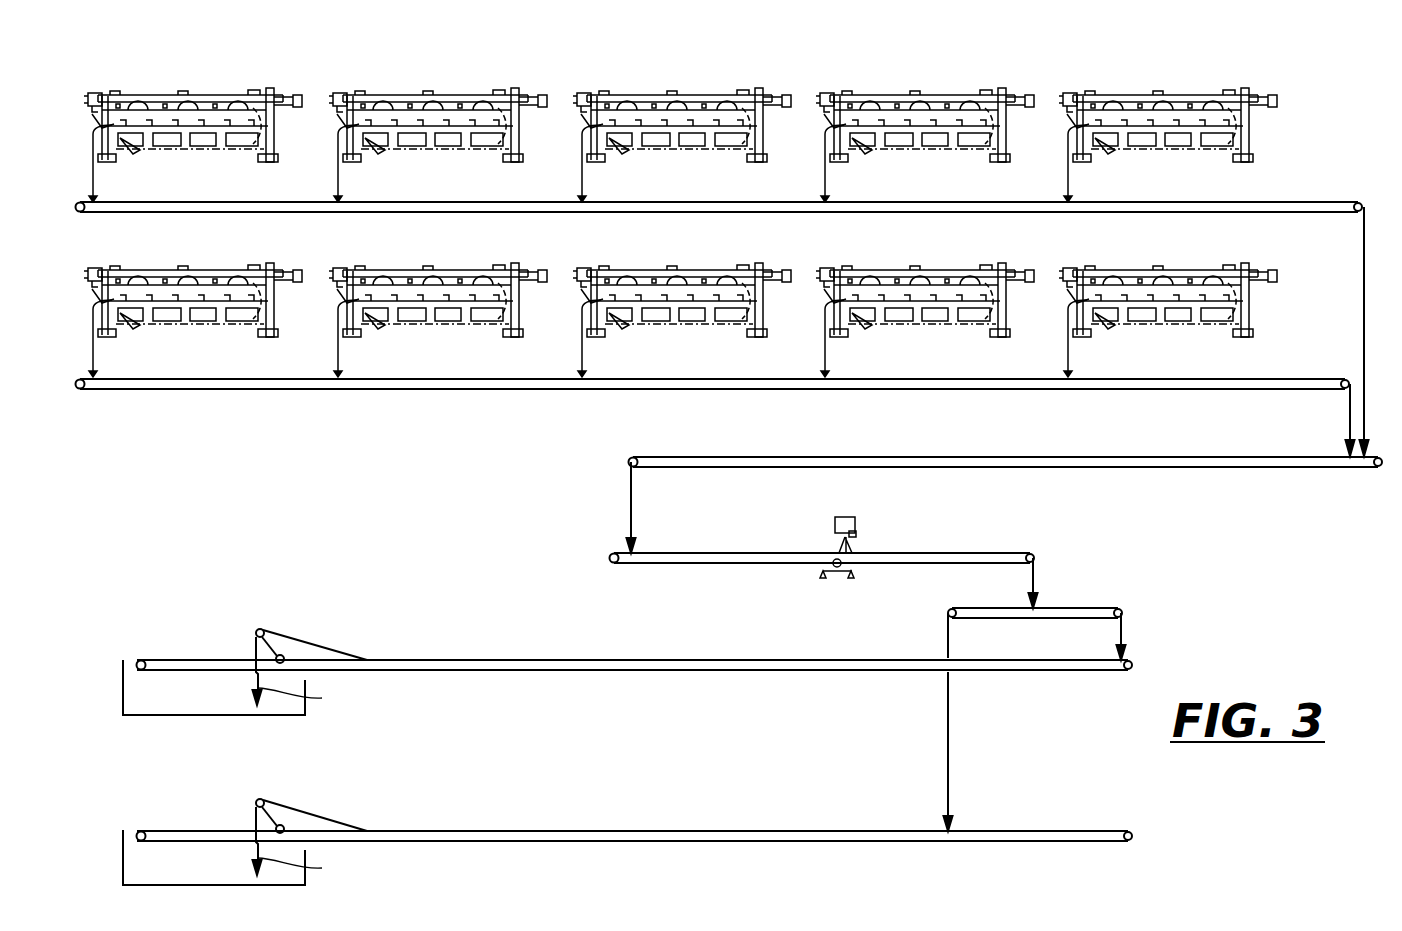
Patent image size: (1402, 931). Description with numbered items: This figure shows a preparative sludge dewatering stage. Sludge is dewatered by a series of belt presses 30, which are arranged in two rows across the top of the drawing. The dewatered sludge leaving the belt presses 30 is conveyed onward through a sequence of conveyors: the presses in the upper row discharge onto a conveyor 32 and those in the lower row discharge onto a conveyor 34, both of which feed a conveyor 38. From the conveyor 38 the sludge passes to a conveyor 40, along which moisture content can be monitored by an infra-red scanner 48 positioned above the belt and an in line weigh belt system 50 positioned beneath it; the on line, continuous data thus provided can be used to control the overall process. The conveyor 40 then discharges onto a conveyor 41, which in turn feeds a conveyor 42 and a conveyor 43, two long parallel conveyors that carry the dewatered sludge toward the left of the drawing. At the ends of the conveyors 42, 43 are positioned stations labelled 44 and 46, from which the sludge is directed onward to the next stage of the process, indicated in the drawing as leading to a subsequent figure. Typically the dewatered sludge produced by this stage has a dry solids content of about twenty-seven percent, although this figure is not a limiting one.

The belt presses 30 is at (372, 103).
The conveyor 32 is at (1282, 204).
The conveyor 34 is at (1280, 382).
The conveyor 38 is at (1275, 468).
The conveyor 40 is at (980, 557).
The conveyor 41 is at (1080, 610).
The conveyor 42 is at (1065, 671).
The conveyor 43 is at (1052, 833).
The first diverter station 44 is at (200, 700).
The second diverter station 46 is at (187, 865).
The infra-red scanner 48 is at (835, 527).
The in line weigh belt system 50 is at (835, 570).